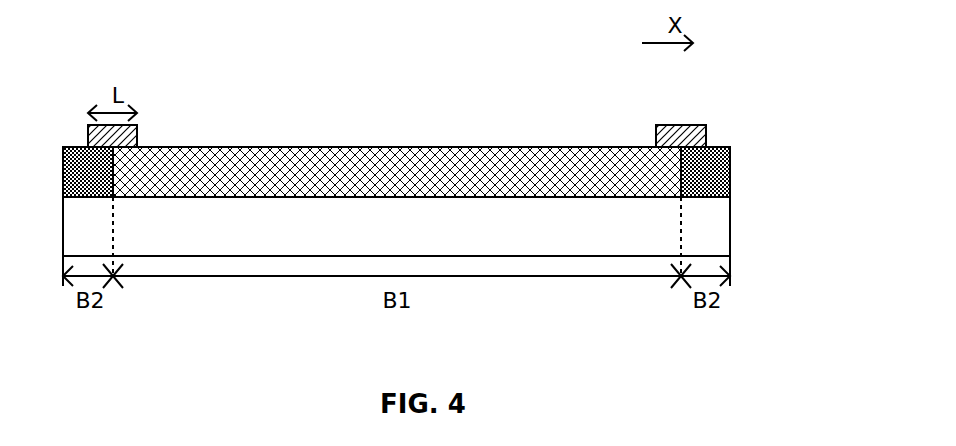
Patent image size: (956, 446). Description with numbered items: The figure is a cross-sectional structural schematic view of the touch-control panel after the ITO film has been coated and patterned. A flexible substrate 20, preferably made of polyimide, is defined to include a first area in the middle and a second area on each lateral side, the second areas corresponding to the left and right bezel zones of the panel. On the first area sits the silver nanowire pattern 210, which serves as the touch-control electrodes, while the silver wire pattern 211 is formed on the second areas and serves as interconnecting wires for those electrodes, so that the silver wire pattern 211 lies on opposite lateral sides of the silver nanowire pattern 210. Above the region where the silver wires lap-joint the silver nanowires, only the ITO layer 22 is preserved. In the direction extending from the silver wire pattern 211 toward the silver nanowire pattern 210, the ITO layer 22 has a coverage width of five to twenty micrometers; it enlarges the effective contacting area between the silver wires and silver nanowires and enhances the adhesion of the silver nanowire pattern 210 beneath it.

The flexible substrate 20 is at (732, 228).
The silver nanowire pattern 210 is at (422, 183).
The silver wire pattern 211 is at (93, 170).
The ITO layer 22 is at (112, 138).